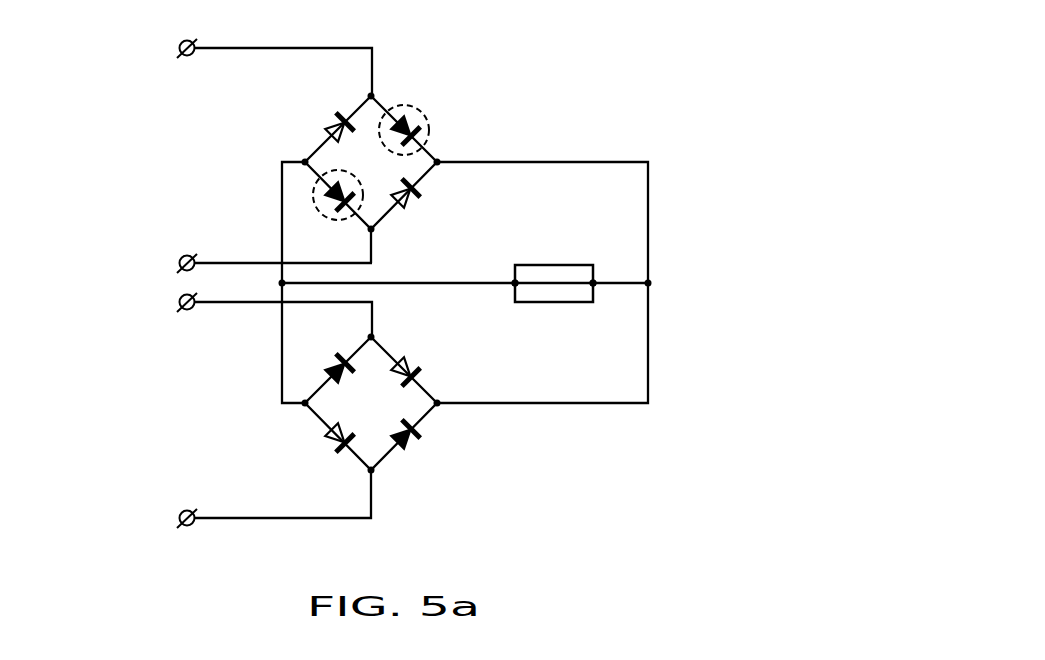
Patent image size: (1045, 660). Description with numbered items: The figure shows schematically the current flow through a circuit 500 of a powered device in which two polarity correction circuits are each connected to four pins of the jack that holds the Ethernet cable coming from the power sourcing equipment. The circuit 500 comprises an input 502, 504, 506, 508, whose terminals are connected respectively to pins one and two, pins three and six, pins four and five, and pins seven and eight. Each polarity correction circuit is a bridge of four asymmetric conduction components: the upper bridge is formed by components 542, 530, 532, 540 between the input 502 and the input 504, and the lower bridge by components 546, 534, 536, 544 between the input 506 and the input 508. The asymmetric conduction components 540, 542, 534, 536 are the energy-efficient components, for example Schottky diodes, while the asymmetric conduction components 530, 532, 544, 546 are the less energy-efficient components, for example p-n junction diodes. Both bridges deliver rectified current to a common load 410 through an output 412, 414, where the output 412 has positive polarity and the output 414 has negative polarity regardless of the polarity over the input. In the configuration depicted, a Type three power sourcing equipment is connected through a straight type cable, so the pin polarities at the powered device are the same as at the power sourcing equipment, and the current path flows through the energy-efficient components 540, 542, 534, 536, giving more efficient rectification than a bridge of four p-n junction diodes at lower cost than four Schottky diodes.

The circuit 500 is at (697, 93).
The input 502 is at (180, 50).
The input 504 is at (180, 265).
The input 506 is at (180, 304).
The input 508 is at (180, 520).
The asymmetric conduction component 530 is at (426, 118).
The asymmetric conduction component 532 is at (320, 204).
The asymmetric conduction component 534 is at (420, 360).
The asymmetric conduction component 536 is at (330, 446).
The asymmetric conduction component 540 is at (410, 203).
The asymmetric conduction component 542 is at (336, 122).
The asymmetric conduction component 544 is at (420, 449).
The asymmetric conduction component 546 is at (328, 362).
The load 410 is at (553, 303).
The output 412 is at (596, 281).
The output 414 is at (513, 285).